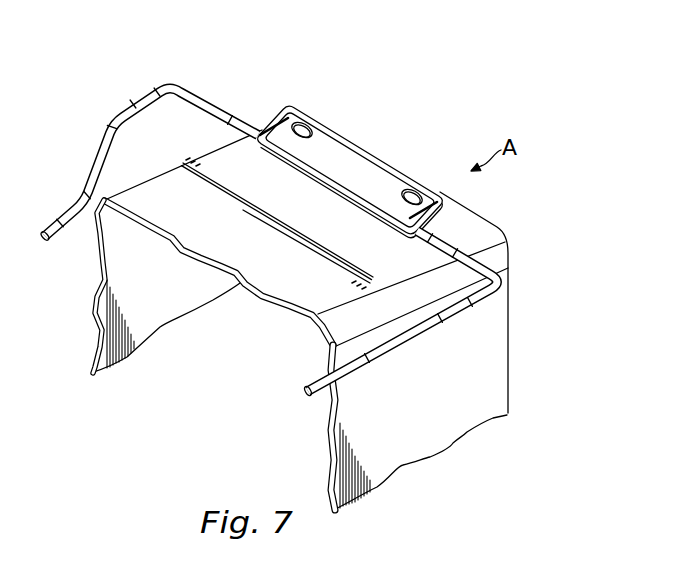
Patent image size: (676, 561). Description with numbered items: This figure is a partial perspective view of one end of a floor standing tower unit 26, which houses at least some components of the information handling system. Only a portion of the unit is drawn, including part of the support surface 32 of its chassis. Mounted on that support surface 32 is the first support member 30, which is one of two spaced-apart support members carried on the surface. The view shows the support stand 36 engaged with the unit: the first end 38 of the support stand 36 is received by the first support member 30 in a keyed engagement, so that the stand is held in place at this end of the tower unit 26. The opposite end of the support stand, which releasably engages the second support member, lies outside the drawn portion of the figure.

The floor standing tower unit 26 is at (533, 218).
The first support member 30 is at (360, 167).
The support surface 32 is at (163, 189).
The support stand 36 is at (507, 279).
The first end 38 is at (217, 104).